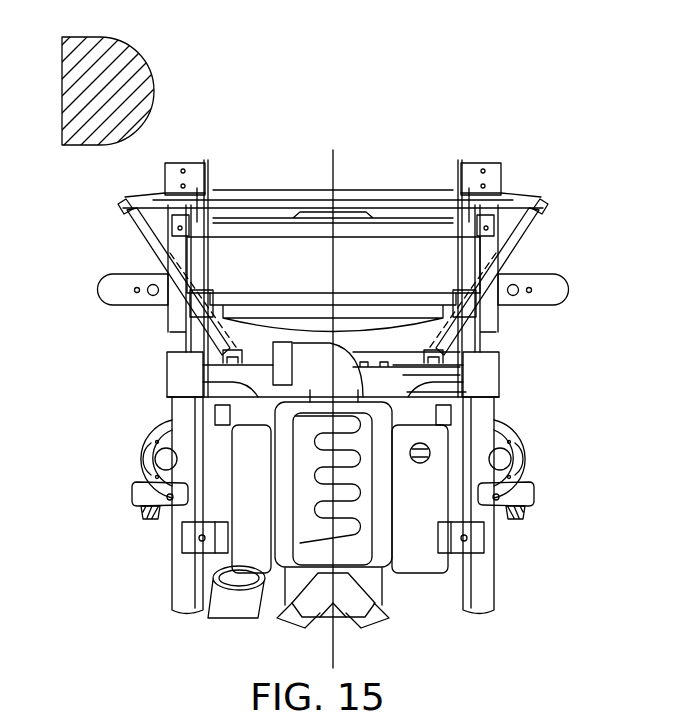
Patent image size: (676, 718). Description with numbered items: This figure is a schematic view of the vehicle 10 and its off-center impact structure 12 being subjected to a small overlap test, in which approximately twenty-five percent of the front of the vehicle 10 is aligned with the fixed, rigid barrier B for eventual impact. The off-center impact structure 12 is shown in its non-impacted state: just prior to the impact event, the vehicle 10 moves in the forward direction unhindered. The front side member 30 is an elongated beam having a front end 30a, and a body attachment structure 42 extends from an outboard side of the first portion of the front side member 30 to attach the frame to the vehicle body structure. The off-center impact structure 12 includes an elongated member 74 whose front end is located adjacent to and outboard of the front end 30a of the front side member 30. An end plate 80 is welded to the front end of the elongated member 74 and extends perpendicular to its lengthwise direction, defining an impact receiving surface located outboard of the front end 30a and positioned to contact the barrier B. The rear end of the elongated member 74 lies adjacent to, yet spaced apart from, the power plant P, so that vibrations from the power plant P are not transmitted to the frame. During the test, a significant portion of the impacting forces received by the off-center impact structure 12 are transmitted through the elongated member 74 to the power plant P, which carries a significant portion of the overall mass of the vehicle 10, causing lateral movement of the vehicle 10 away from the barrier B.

The barrier B is at (128, 72).
The vehicle 10 is at (423, 110).
The off-center impact structure 12 is at (192, 279).
The front side member 30 is at (182, 380).
The front end 30a is at (194, 163).
The body attachment structure 42 is at (110, 291).
The elongated member 74 is at (141, 235).
The end plate 80 is at (120, 212).
The power plant P is at (372, 513).